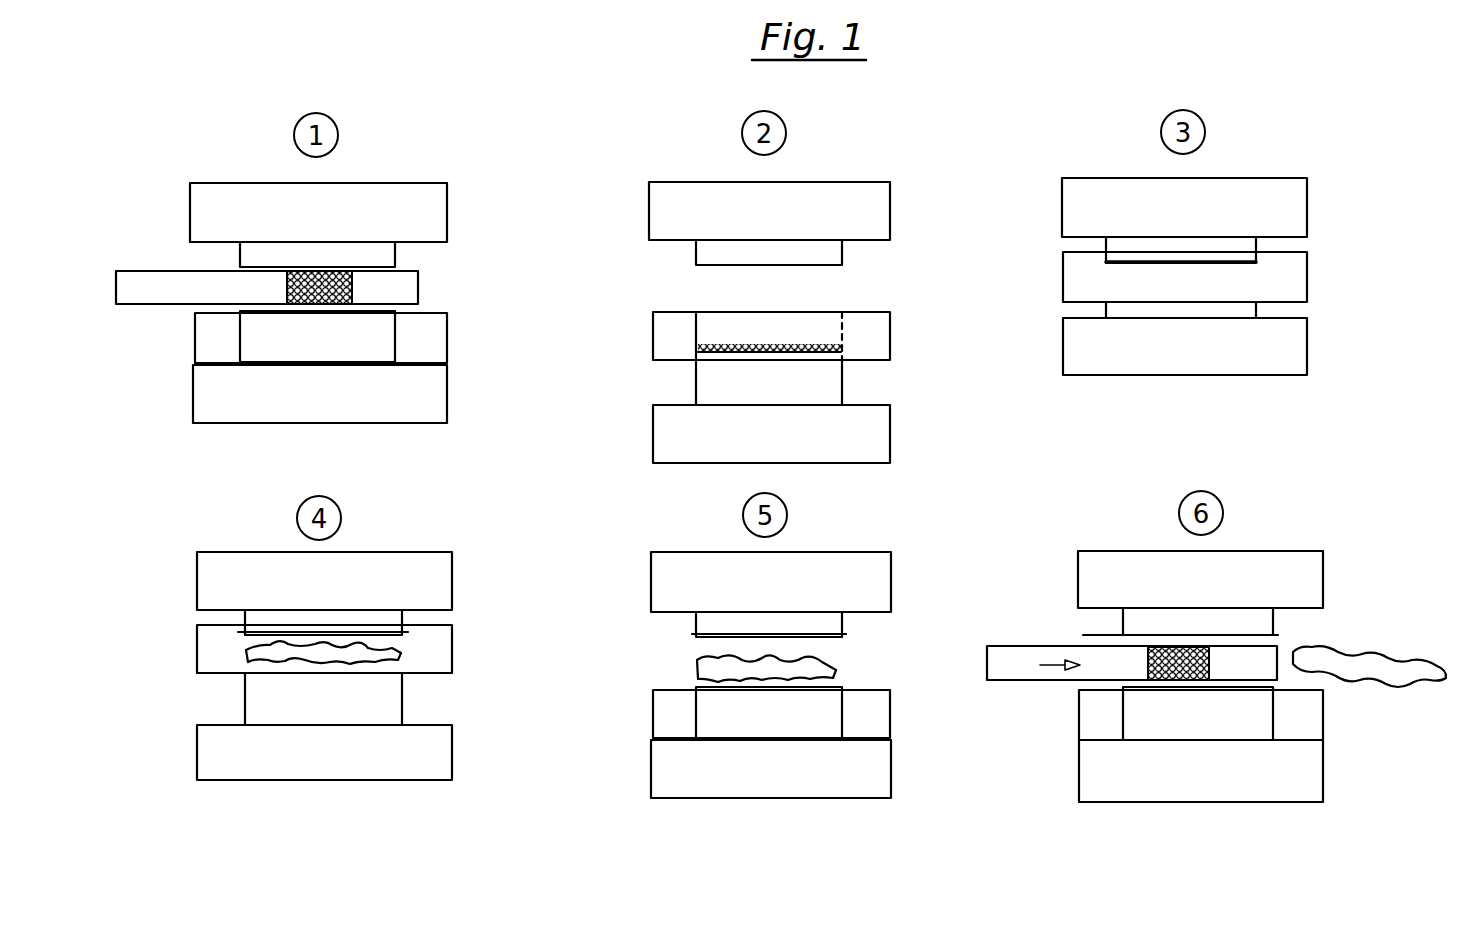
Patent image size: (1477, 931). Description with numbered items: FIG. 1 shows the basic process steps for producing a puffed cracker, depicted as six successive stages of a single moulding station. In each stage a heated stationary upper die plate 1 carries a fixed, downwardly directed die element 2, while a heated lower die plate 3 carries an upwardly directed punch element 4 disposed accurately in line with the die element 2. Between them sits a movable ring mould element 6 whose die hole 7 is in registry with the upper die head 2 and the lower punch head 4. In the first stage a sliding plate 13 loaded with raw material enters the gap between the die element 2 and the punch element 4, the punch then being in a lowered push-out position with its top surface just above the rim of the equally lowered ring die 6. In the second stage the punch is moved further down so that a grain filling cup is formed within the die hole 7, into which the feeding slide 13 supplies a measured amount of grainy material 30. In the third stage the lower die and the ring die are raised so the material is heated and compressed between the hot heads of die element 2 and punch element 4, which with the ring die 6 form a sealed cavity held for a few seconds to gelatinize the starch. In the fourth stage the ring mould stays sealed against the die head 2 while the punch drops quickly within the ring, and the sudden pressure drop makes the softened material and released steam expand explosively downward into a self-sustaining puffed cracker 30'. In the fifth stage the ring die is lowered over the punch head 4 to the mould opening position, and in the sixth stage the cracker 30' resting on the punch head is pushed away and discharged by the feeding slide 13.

The upper die plate 1 is at (656, 206).
The die element 2 is at (697, 253).
The die plate 3 is at (882, 432).
The punch element 4 is at (830, 387).
The ring mould element 6 is at (880, 323).
The die hole 7 is at (826, 323).
The sliding plate 13 is at (412, 285).
The grainy material 30 is at (564, 338).
The puffed cracker 30' is at (1071, 621).